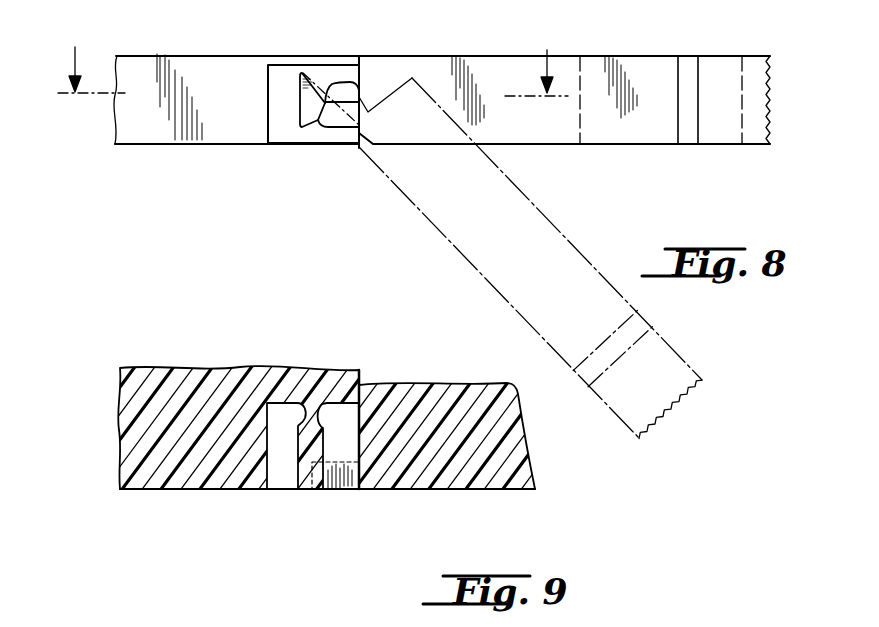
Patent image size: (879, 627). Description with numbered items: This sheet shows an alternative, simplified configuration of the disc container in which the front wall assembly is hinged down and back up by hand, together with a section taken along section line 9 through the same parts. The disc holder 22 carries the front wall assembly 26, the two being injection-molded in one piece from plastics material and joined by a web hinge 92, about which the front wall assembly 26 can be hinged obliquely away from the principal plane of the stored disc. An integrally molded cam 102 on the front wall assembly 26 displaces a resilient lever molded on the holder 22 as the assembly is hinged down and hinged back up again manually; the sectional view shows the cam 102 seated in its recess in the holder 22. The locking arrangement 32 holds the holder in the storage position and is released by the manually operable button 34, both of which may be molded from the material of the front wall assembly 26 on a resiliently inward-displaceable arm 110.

In FIG. 8, the section line 9— 9 is at (313, 85).
In FIG. 8, the disc holder 22 is at (155, 151).
In FIG. 9, the disc holder 22 is at (172, 497).
In FIG. 8, the front wall assembly 26 is at (480, 65).
In FIG. 9, the front wall assembly 26 is at (495, 489).
In FIG. 8, the locking arrangement 32 is at (690, 135).
In FIG. 8, the button 34 is at (754, 137).
In FIG. 8, the hinge 92 is at (360, 127).
In FIG. 8, the cam 102 is at (346, 116).
In FIG. 9, the cam 102 is at (348, 483).
In FIG. 8, the arm 110 is at (607, 137).